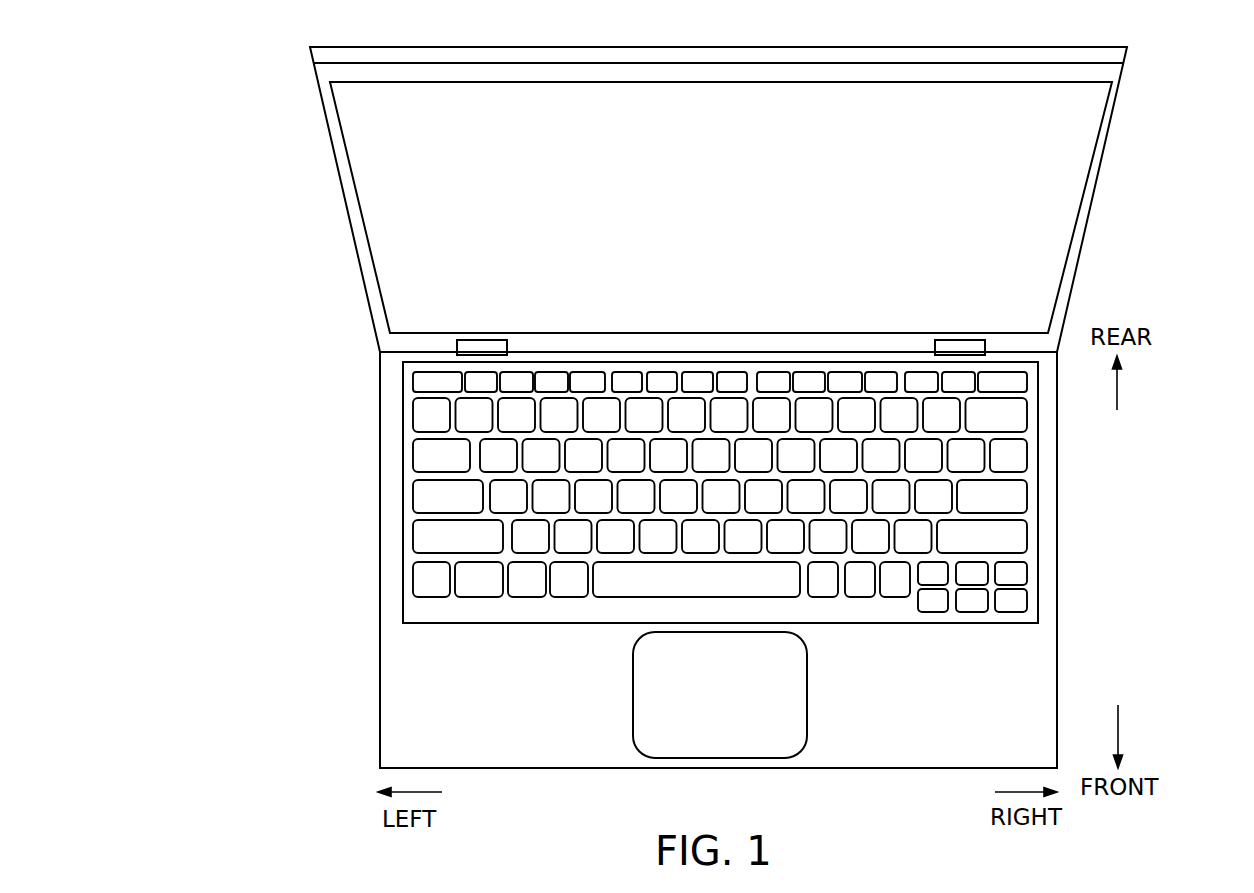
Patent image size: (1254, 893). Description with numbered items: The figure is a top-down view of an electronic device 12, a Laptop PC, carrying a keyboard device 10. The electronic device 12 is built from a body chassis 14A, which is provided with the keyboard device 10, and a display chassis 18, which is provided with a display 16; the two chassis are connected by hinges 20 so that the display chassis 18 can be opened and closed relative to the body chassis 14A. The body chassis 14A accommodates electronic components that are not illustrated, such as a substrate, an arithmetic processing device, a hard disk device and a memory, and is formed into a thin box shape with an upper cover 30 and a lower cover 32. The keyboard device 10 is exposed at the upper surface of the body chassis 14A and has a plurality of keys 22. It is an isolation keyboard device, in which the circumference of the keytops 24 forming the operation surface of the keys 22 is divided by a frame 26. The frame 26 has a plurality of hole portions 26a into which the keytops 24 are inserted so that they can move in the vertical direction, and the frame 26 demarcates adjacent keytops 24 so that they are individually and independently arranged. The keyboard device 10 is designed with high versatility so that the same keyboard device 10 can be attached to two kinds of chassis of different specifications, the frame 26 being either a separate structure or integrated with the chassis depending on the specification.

The keyboard device 10 is at (398, 469).
The electronic device 12 is at (188, 184).
The body chassis 14A is at (1077, 527).
The display 16 is at (1055, 197).
The display chassis 18 is at (1118, 129).
The hinges 20 is at (472, 345).
The keys 22 is at (972, 453).
The keytops 24 is at (928, 497).
The frame 26 is at (865, 618).
The hole portions 26a is at (606, 403).
The upper cover 30 is at (410, 681).
The lower cover 32 is at (379, 736).